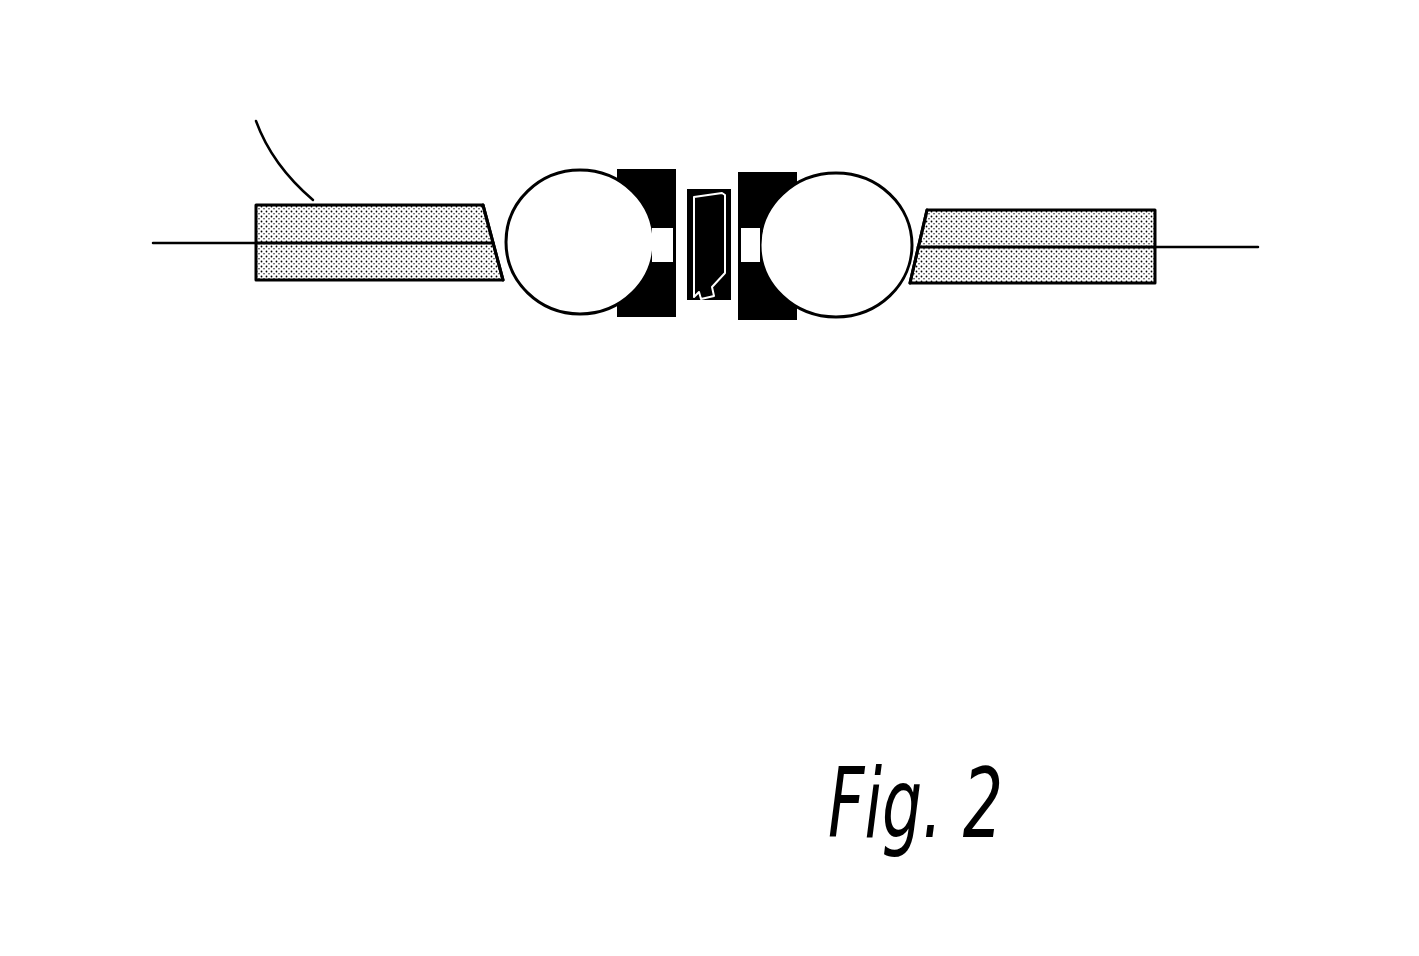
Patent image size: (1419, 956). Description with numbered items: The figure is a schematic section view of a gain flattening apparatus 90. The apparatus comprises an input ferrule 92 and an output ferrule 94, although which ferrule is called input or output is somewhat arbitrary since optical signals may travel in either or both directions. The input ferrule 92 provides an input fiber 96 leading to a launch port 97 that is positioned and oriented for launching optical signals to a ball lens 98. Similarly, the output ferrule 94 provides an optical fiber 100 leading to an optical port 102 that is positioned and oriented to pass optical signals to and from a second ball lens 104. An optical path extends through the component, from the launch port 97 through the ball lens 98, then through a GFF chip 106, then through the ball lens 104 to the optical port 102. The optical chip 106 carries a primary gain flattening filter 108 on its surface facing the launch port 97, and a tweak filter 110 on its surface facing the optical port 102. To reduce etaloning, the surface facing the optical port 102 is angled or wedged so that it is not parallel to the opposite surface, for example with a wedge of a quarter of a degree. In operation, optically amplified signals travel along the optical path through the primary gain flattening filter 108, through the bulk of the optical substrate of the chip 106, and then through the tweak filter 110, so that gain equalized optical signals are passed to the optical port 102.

The gain flattening apparatus 90 is at (336, 427).
The input ferrule 92 is at (278, 282).
The output ferrule 94 is at (1110, 285).
The input fiber 96 is at (193, 245).
The launch port 97 is at (498, 225).
The ball lens 98 is at (540, 295).
The optical fiber 100 is at (1233, 247).
The optical port 102 is at (915, 222).
The ball lens 104 is at (852, 306).
The GFF chip 106 is at (691, 303).
The primary gain flattening filter 108 is at (701, 195).
The tweak filter 110 is at (708, 301).